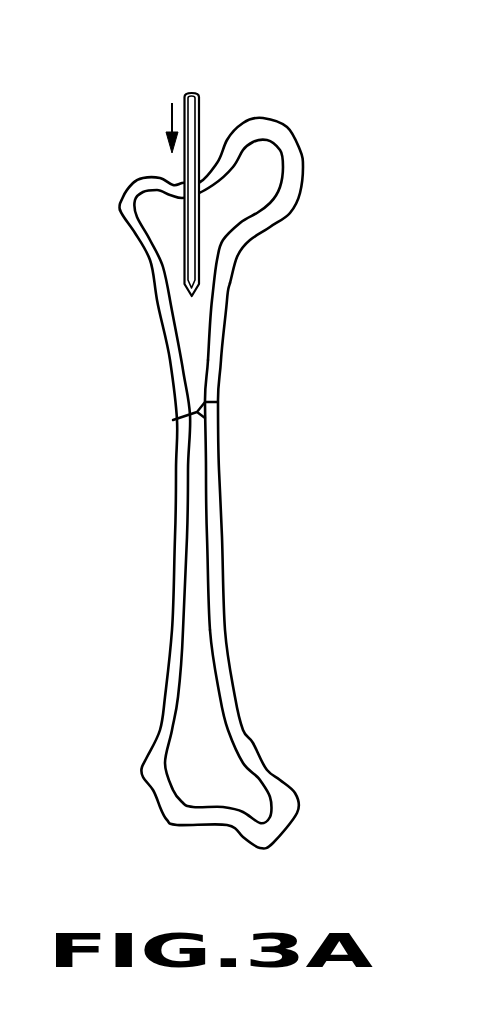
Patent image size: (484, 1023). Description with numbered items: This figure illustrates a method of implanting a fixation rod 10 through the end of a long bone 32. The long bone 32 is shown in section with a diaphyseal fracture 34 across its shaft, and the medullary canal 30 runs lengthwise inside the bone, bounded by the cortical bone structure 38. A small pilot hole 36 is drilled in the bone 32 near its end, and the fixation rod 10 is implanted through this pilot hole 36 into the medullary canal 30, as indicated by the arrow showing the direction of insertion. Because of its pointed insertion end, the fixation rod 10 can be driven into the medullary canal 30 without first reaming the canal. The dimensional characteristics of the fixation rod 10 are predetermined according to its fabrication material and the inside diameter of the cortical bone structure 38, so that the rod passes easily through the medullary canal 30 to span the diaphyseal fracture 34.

The fixation rod 10 is at (197, 98).
The medullary canal 30 is at (197, 332).
The long bone 32 is at (303, 157).
The diaphyseal fracture 34 is at (205, 418).
The pilot hole 36 is at (180, 180).
The cortical bone structure 38 is at (212, 463).